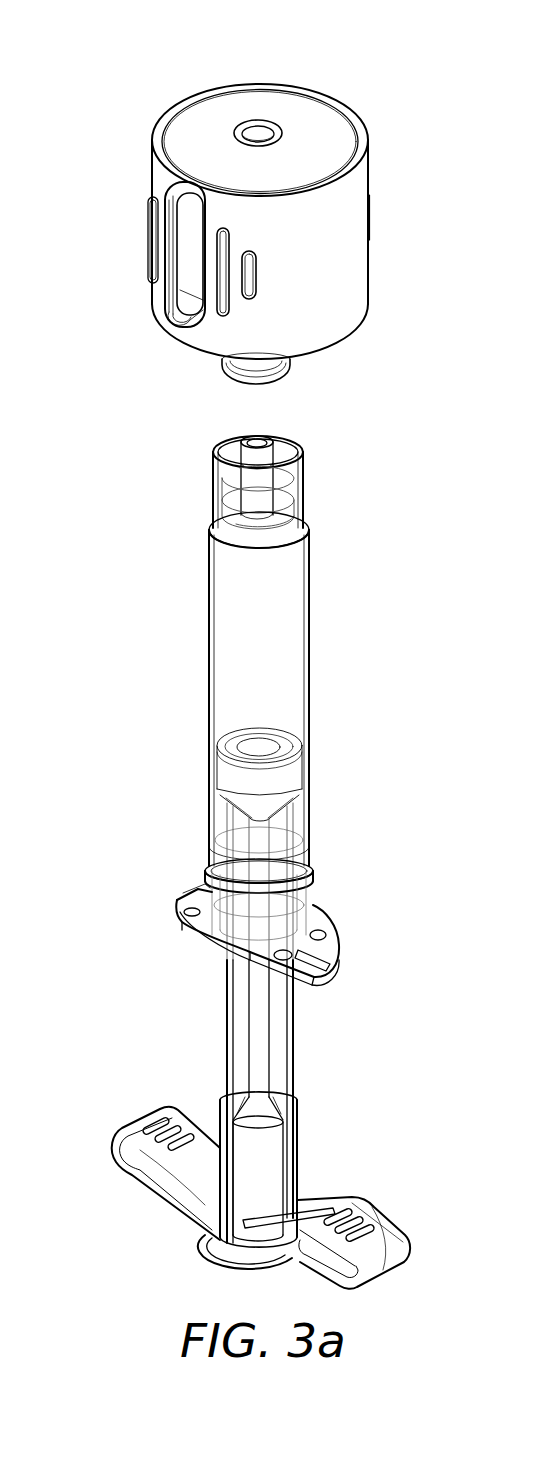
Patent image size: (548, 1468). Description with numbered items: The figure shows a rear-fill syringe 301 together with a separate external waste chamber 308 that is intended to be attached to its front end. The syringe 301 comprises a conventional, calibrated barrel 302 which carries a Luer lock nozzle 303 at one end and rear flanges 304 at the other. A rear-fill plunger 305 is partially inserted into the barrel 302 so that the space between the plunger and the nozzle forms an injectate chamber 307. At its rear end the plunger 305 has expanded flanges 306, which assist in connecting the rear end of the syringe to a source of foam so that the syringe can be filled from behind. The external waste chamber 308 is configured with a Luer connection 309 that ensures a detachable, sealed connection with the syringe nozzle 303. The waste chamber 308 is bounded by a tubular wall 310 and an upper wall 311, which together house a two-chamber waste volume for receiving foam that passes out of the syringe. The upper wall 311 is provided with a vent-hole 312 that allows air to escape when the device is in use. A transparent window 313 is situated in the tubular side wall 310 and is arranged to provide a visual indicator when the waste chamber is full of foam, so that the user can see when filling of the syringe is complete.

The rear-fill syringe 301 is at (157, 545).
The barrel 302 is at (310, 638).
The Luer lock nozzle 303 is at (303, 481).
The rear flanges 304 is at (335, 938).
The rear-fill plunger 305 is at (280, 1027).
The expanded flanges 306 is at (393, 1257).
The injectate chamber 307 is at (240, 665).
The external waste chamber 308 is at (134, 135).
The Luer connection 309 is at (287, 372).
The tubular wall 310 is at (358, 262).
The upper wall 311 is at (197, 108).
The vent-hole 312 is at (270, 130).
The transparent window 313 is at (193, 248).